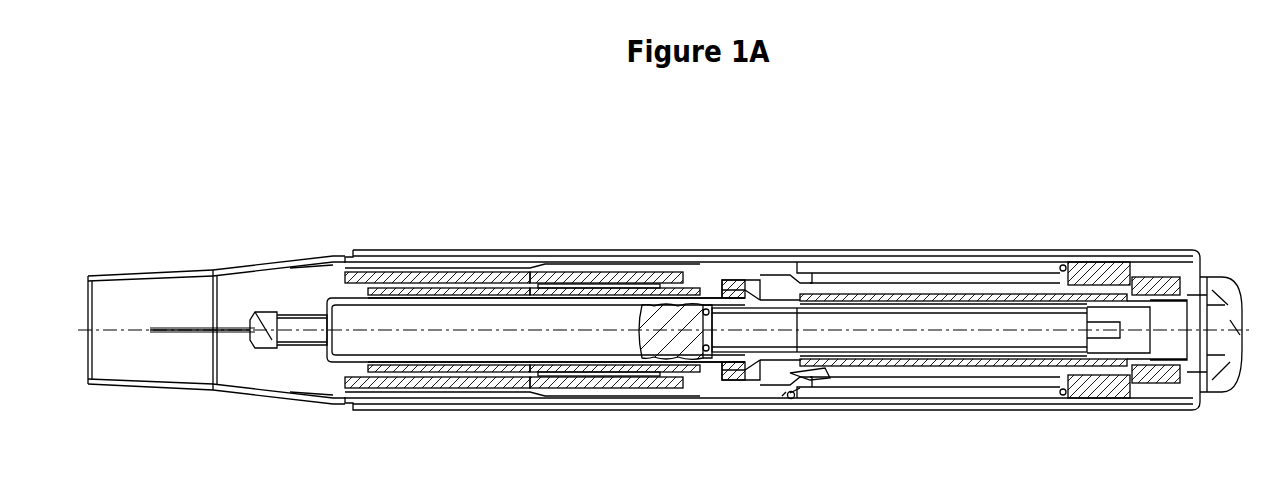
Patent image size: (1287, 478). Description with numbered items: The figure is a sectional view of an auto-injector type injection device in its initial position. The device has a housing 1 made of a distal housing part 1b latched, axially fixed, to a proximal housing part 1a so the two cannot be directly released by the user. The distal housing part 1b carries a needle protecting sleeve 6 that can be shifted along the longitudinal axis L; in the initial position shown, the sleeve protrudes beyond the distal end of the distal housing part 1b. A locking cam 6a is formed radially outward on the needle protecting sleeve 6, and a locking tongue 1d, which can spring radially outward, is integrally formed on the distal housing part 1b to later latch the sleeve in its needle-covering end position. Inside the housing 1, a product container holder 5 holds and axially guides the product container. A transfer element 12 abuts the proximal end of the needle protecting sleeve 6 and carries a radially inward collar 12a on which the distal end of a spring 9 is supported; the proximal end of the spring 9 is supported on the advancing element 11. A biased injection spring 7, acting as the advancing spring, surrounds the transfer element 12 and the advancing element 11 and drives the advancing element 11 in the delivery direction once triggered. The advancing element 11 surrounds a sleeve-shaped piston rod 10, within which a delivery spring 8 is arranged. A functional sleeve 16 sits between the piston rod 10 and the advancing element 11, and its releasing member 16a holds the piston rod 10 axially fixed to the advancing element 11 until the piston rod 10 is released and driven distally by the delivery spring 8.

The housing 1 is at (530, 230).
The proximal housing part 1a is at (420, 257).
The distal housing part 1b is at (322, 268).
The locking tongue 1d is at (455, 270).
The product container holder 5 is at (393, 272).
The needle protecting sleeve 6 is at (277, 268).
The locking cam 6a is at (538, 272).
The injection spring 7 is at (797, 257).
The delivery spring 8 is at (965, 318).
The spring 9 is at (1053, 293).
The piston rod 10 is at (910, 312).
The advancing element 11 is at (918, 367).
The transfer element 12 is at (692, 298).
The collar 12a is at (832, 370).
The functional sleeve 16 is at (883, 302).
The releasing member 16a is at (785, 270).
The longitudinal axis L is at (137, 326).